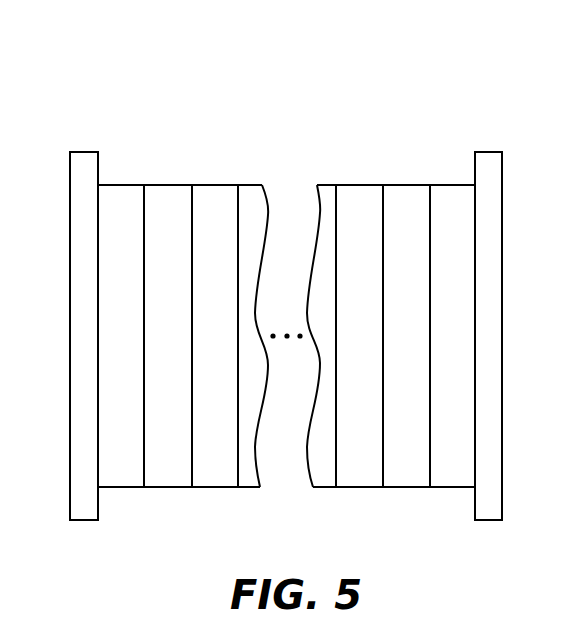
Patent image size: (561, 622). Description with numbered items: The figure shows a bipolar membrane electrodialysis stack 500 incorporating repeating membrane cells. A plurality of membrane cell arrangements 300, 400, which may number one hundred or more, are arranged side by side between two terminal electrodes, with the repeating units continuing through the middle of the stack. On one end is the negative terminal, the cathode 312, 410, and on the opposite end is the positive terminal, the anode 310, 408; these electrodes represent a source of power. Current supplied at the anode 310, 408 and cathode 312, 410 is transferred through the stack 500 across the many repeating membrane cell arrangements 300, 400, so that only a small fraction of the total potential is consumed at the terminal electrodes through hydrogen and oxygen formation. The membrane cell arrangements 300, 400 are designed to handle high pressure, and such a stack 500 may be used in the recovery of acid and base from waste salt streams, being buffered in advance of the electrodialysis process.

The membrane cell stack 500 is at (147, 72).
The cathode 312 is at (61, 314).
The cathode 410 is at (70, 185).
The anode 310 is at (515, 314).
The anode 408 is at (503, 183).
The membrane cell arrangement 300 is at (286, 339).
The membrane cell arrangement 400 is at (122, 192).